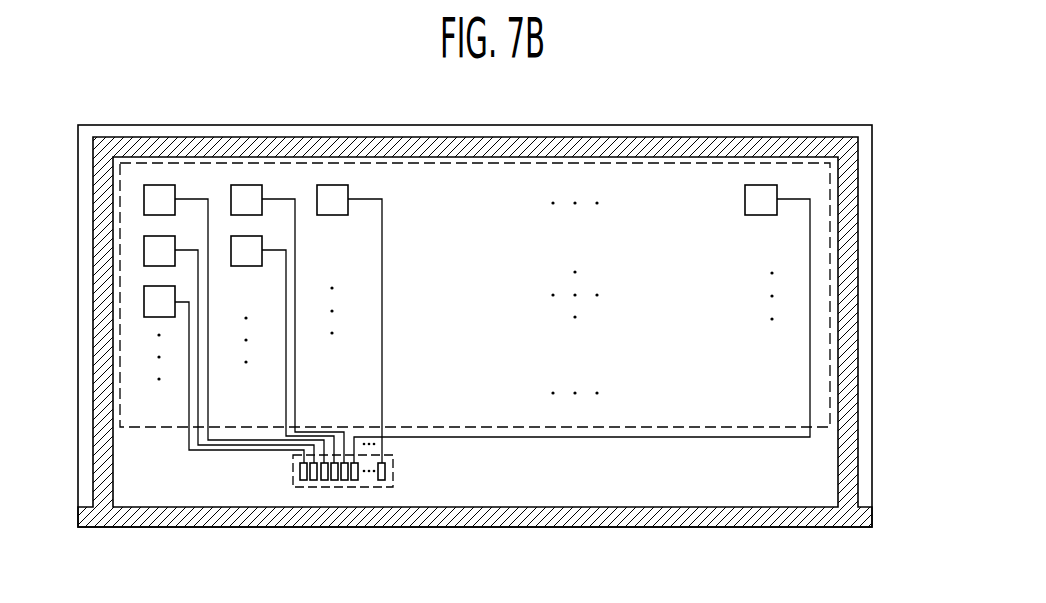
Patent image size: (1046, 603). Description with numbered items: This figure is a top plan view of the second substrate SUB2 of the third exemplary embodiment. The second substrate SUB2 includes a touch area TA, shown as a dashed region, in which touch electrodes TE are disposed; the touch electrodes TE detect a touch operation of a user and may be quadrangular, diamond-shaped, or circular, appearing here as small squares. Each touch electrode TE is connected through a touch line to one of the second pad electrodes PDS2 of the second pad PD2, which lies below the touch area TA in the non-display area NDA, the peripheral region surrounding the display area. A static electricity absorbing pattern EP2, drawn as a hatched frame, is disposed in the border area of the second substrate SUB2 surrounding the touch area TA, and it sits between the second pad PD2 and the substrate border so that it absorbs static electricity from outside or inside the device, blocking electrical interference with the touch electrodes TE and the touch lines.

The touch electrodes TE is at (144, 198).
The touch area TA is at (476, 165).
The second substrate SUB2 is at (873, 323).
The static electricity absorbing pattern EP2 is at (825, 527).
The non-display area NDA is at (621, 489).
The second pad PD2 is at (310, 487).
The second pad electrodes PDS2 is at (352, 487).